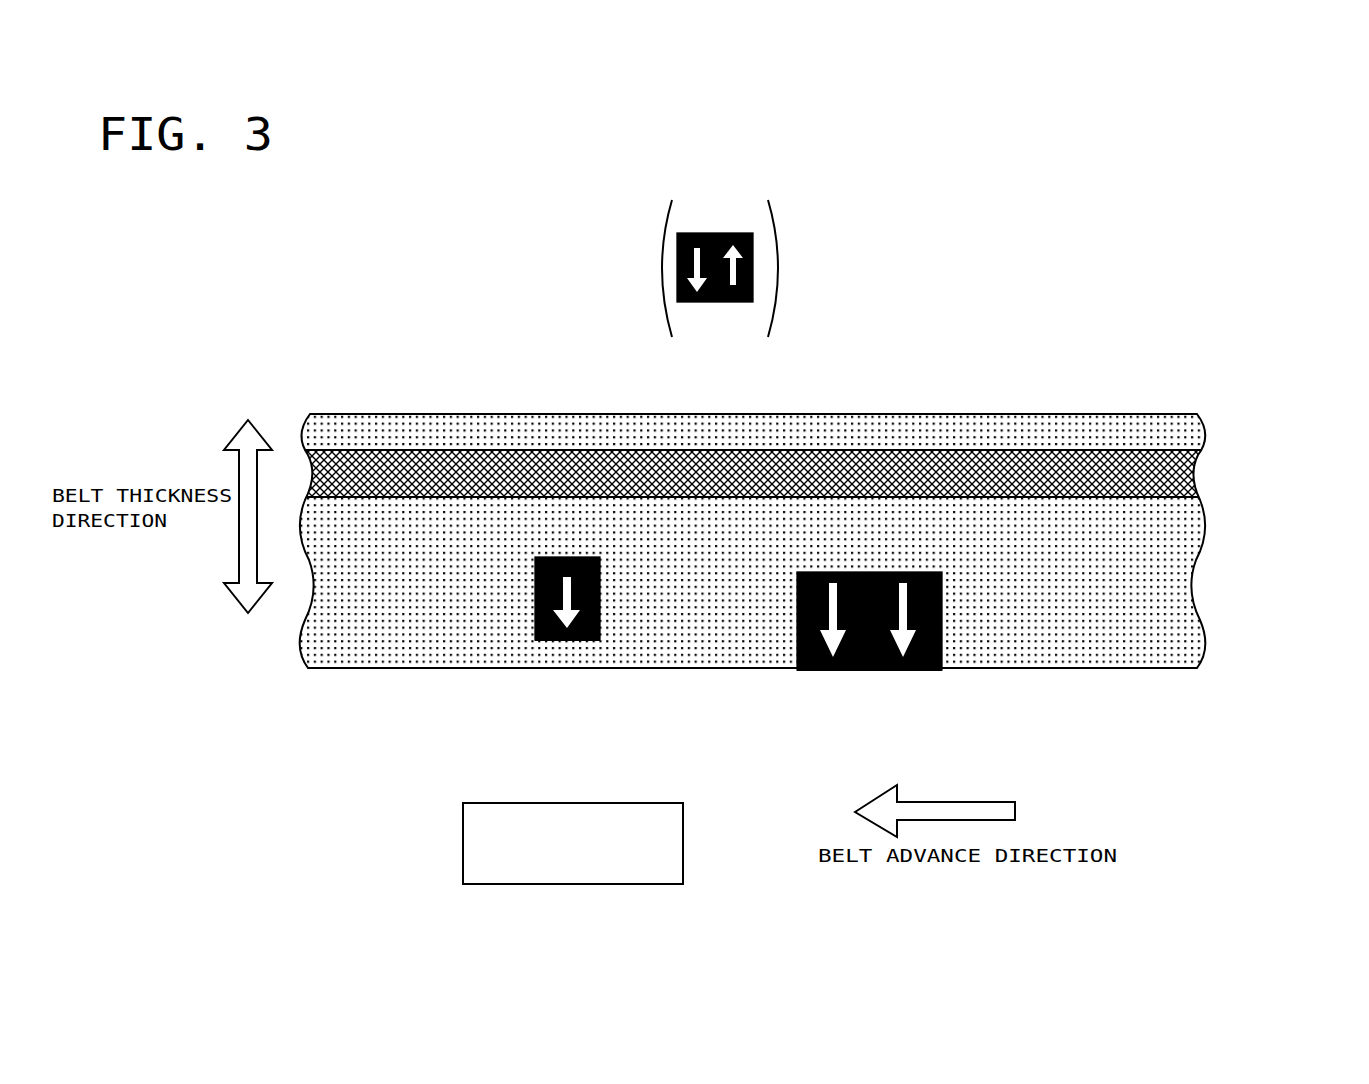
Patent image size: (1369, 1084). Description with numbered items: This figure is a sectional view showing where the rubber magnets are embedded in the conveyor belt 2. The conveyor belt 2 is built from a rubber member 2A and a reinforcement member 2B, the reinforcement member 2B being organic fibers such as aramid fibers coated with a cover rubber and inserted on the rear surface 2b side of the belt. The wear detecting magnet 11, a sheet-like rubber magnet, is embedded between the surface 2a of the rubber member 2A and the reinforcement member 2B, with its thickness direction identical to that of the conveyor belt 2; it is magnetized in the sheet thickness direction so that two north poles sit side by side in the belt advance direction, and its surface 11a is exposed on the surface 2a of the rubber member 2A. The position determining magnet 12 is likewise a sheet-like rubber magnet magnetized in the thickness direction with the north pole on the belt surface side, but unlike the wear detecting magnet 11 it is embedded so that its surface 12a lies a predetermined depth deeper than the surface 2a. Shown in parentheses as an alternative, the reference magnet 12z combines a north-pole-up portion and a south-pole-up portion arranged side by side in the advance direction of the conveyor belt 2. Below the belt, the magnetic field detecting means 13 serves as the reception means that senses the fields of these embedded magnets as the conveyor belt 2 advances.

The conveyor belt 2 is at (824, 543).
The rubber member 2A is at (1141, 587).
The reinforcement member 2B is at (1186, 449).
The surface of the rubber member 2a is at (1028, 670).
The rear surface of the conveyor belt 2b is at (1139, 414).
The wear detecting magnet 11 is at (868, 572).
The surface of the wear detecting magnet 11a is at (868, 670).
The position determining magnet 12 is at (585, 557).
The surface of the position determining magnet 12a is at (585, 640).
The reference magnet 12z is at (645, 268).
The magnetic field detecting means 13 is at (630, 803).